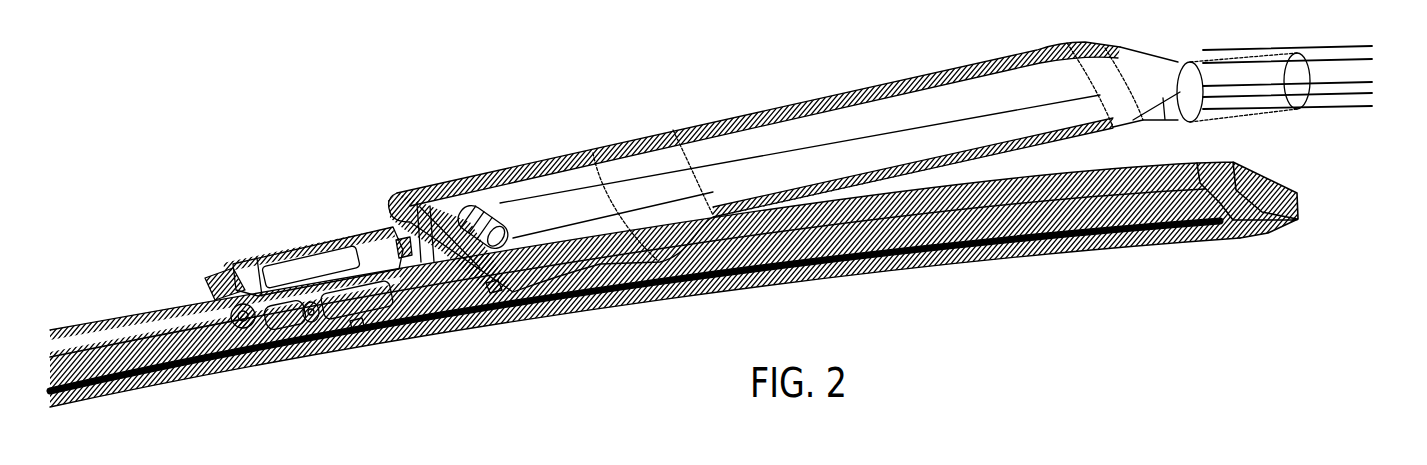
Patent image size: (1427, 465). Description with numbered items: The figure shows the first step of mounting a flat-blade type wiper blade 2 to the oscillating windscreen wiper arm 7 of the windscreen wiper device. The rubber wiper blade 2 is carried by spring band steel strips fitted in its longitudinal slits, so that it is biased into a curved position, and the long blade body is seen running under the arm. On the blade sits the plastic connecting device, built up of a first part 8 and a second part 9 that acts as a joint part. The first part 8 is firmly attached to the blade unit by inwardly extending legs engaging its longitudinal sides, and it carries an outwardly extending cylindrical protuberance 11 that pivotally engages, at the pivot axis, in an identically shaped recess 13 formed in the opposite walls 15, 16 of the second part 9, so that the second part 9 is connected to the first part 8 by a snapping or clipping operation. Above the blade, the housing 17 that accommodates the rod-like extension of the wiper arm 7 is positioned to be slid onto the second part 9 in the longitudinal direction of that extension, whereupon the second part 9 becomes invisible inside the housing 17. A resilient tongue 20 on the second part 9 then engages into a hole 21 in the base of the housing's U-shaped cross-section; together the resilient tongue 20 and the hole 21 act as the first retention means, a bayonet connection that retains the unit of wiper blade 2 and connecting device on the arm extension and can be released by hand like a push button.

The wiper blade 2 is at (947, 260).
The windscreen wiper arm 7 is at (1322, 75).
The first part 8 is at (247, 337).
The second part 9 is at (333, 242).
The cylindrical protuberance 11 is at (308, 318).
The recess 13 is at (313, 298).
The wall 15 is at (378, 297).
The wall 16 is at (287, 250).
The housing 17 is at (797, 127).
The resilient tongue 20 is at (220, 287).
The hole 21 is at (474, 220).